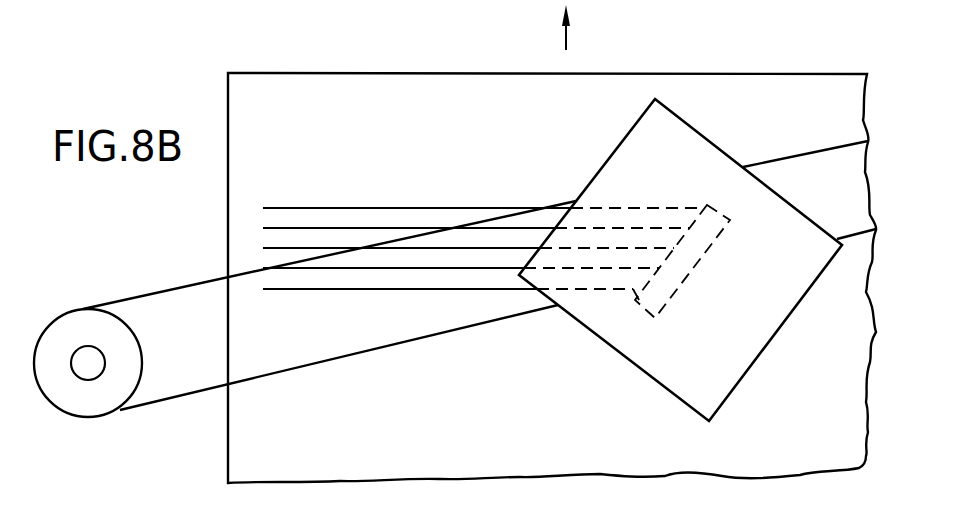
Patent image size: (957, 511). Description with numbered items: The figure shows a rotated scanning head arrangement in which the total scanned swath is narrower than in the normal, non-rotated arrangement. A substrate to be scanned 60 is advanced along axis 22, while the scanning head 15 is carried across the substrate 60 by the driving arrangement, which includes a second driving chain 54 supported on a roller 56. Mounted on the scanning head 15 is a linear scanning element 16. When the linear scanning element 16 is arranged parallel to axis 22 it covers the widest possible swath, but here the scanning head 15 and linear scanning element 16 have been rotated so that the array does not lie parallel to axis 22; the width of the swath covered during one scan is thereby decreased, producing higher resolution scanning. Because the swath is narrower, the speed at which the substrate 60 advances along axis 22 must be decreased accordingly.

The scanning head 15 is at (668, 118).
The linear scanning element 16 is at (728, 221).
The axis 22 is at (563, 33).
The second driving chain 54 is at (807, 152).
The roller 56 is at (83, 322).
The substrate to be scanned 60 is at (620, 82).